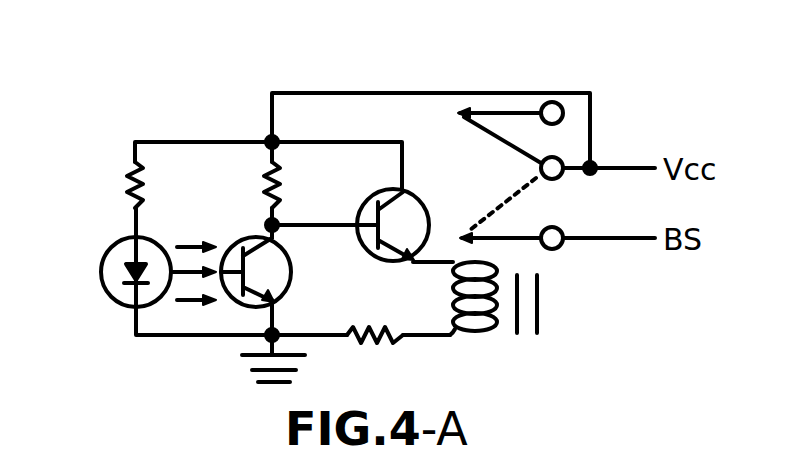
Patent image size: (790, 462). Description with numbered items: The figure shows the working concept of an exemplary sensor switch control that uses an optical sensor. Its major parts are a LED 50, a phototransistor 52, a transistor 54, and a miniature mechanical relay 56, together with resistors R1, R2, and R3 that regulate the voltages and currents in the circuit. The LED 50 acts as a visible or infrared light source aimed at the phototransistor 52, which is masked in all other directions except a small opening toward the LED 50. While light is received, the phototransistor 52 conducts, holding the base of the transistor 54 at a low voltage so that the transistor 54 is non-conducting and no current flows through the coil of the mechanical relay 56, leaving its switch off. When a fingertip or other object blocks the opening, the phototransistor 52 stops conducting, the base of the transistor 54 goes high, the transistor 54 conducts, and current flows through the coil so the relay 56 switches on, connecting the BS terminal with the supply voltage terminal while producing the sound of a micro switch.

The LED 50 is at (136, 272).
The phototransistor 52 is at (280, 272).
The transistor 54 is at (380, 214).
The miniature mechanical relay 56 is at (520, 298).
The resistor R1 is at (110, 188).
The resistor R2 is at (246, 188).
The resistor R3 is at (375, 315).